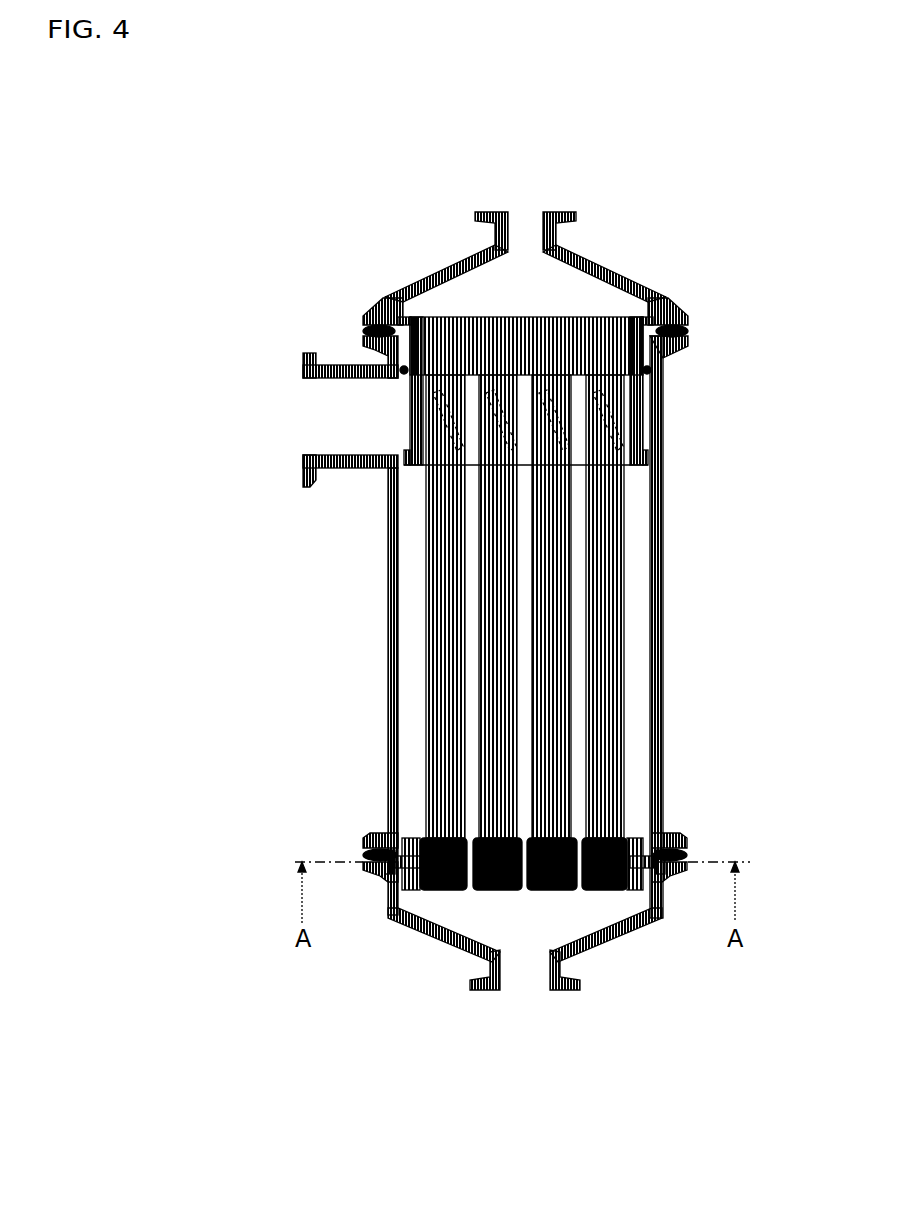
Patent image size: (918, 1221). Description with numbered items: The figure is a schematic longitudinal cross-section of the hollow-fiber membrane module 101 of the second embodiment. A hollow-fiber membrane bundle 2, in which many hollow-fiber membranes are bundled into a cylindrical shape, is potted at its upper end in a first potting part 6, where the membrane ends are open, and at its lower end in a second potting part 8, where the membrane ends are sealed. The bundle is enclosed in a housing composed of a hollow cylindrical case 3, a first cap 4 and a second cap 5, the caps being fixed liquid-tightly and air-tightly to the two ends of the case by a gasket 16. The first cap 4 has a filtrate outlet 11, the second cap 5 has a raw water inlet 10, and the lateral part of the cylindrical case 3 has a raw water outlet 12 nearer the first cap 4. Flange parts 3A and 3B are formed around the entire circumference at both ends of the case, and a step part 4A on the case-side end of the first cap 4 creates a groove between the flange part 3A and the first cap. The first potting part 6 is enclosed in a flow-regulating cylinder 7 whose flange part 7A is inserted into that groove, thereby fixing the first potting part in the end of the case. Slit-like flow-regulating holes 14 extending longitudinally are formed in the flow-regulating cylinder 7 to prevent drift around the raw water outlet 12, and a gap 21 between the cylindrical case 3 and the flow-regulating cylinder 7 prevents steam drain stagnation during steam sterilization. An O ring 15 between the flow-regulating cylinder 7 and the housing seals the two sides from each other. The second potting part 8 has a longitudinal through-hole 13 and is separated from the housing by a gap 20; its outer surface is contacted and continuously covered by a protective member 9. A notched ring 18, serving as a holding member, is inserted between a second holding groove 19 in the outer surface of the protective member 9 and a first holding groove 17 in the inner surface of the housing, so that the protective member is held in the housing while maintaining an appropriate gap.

The hollow-fiber membrane module 101 is at (700, 609).
The hollow-fiber membrane bundle 2 is at (618, 587).
The cylindrical case 3 is at (663, 430).
The flange part 3A is at (363, 346).
The flange part 3B is at (370, 836).
The first cap 4 is at (608, 282).
The step part 4A is at (363, 318).
The second cap 5 is at (430, 937).
The first potting part 6 is at (470, 330).
The flow-regulating cylinder 7 is at (410, 322).
The flange part 7A is at (663, 307).
The second potting part 8 is at (497, 872).
The protective member 9 is at (392, 836).
The raw water inlet 10 is at (530, 985).
The filtrate outlet 11 is at (530, 215).
The raw water outlet 12 is at (300, 415).
The through-hole 13 is at (575, 892).
The flow-regulating holes 14 is at (433, 467).
The O ring 15 is at (663, 383).
The gasket 16 is at (688, 333).
The first holding groove 17 is at (383, 880).
The ring 18 is at (655, 830).
The second holding groove 19 is at (667, 880).
The gap 20 is at (660, 876).
The gap 21 is at (663, 465).